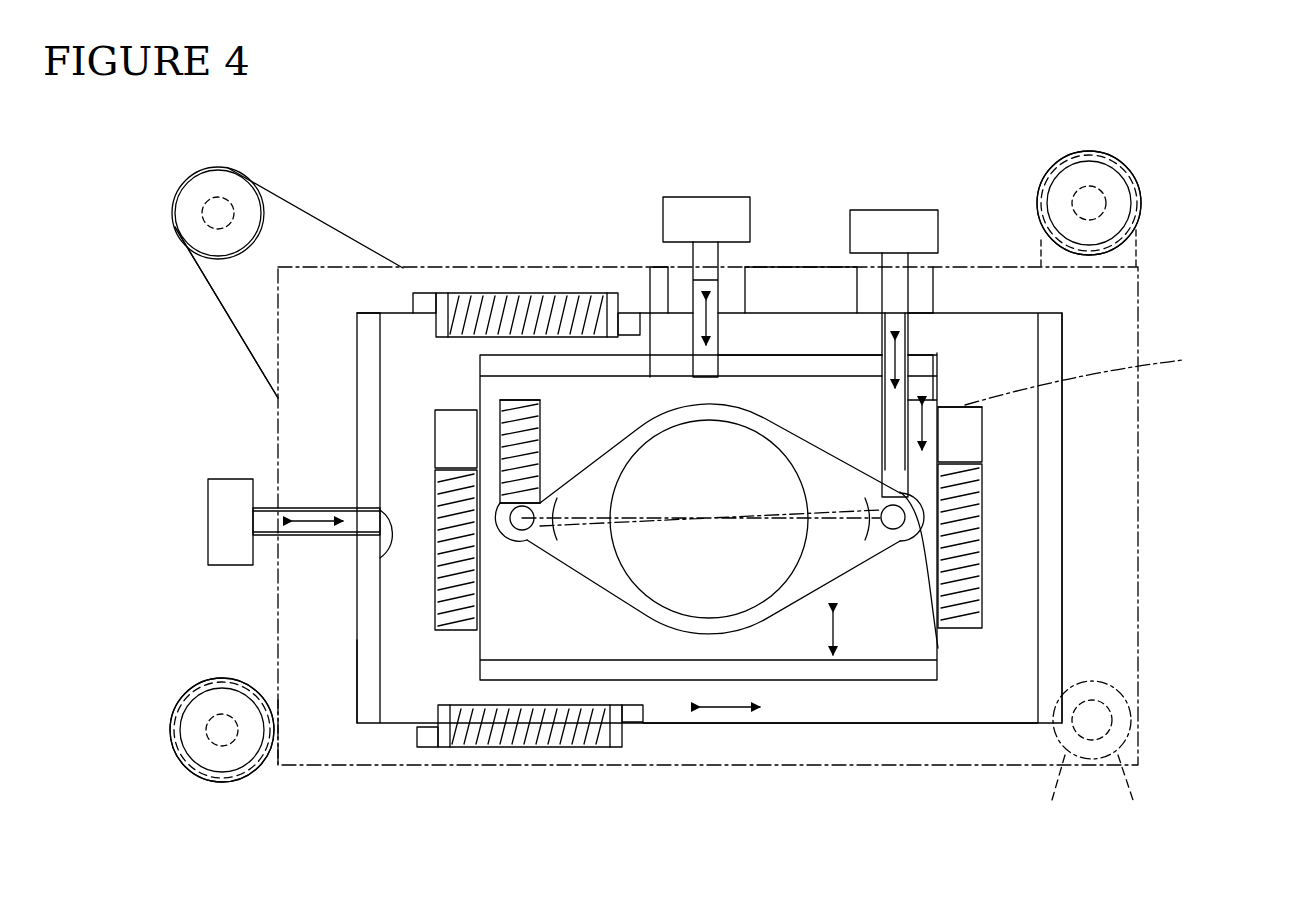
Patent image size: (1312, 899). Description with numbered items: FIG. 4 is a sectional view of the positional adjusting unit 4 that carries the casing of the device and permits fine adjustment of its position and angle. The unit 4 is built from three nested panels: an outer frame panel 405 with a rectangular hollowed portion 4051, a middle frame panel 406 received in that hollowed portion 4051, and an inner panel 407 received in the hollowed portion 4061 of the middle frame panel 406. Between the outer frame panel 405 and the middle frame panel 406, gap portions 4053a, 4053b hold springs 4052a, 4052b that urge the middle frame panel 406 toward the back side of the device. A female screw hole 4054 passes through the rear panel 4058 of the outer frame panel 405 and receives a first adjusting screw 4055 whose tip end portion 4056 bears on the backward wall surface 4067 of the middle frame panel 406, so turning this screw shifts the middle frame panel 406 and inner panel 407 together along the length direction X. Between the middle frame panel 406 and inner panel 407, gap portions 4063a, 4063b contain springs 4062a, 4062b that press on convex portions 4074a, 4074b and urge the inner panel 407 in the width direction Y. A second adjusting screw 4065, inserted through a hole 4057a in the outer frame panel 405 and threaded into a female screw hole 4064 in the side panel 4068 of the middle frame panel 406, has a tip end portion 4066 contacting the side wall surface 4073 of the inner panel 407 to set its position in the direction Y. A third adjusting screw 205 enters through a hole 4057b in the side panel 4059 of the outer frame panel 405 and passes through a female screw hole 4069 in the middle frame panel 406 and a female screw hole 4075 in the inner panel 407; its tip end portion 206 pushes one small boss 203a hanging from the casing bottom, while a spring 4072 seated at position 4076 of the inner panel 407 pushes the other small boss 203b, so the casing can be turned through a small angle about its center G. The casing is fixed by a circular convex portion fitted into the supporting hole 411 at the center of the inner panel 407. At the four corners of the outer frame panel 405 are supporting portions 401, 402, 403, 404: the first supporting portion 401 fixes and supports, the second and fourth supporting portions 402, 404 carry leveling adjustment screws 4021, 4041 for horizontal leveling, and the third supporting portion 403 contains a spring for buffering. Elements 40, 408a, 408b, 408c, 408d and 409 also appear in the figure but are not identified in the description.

The positional adjusting unit 4 is at (1130, 480).
The objective lens 40 is at (709, 519).
The first supporting portion 401 is at (1095, 745).
The second supporting portion 402 is at (212, 742).
The leveling adjustment screw 4021 is at (172, 722).
The third supporting portion 403 is at (250, 213).
The fourth supporting portion 404 is at (1088, 192).
The leveling adjustment screw 4041 is at (1140, 190).
The outer frame panel 405 is at (828, 744).
The middle frame panel 406 is at (751, 642).
The inner panel 407 is at (905, 648).
The belt portion 408a is at (1075, 745).
The belt portion 408b is at (268, 765).
The belt portion 408c is at (310, 242).
The belt portion 408d is at (1125, 253).
The center axis 409 is at (797, 620).
The supporting hole 411 is at (698, 632).
The hollowed portion 4051 is at (398, 580).
The spring 4052a is at (470, 295).
The spring 4052b is at (515, 745).
The gap portion 4053a is at (526, 249).
The gap portion 4053b is at (530, 798).
The female screw hole 4054 is at (300, 505).
The first adjusting screw 4055 is at (232, 515).
The tip end portion 4056 is at (395, 540).
The hole 4057a is at (663, 282).
The hole 4057b is at (920, 290).
The rear panel 4058 is at (305, 640).
The side panel 4059 is at (975, 290).
The hollowed portion 4061 is at (840, 330).
The spring 4062a is at (975, 462).
The spring 4062b is at (450, 445).
The gap portion 4063a is at (985, 530).
The gap portion 4063b is at (432, 555).
The female screw hole 4064 is at (755, 376).
The second adjusting screw 4065 is at (705, 230).
The tip end portion 4066 is at (810, 405).
The backward wall surface 4067 is at (377, 350).
The side panel 4068 is at (870, 226).
The female screw hole 4069 is at (910, 337).
The spring 4072 is at (540, 440).
The side wall surface 4073 is at (643, 303).
The convex portion 4074a is at (975, 445).
The convex portion 4074b is at (275, 395).
The female screw hole 4075 is at (910, 395).
The predetermined position 4076 is at (505, 415).
The small boss 203a is at (893, 530).
The small boss 203b is at (522, 530).
The third adjusting screw 205 is at (903, 210).
The tip end portion 206 is at (954, 588).
The center of the casing G is at (715, 514).
The X axis direction X is at (728, 712).
The Y axis direction Y is at (1084, 375).